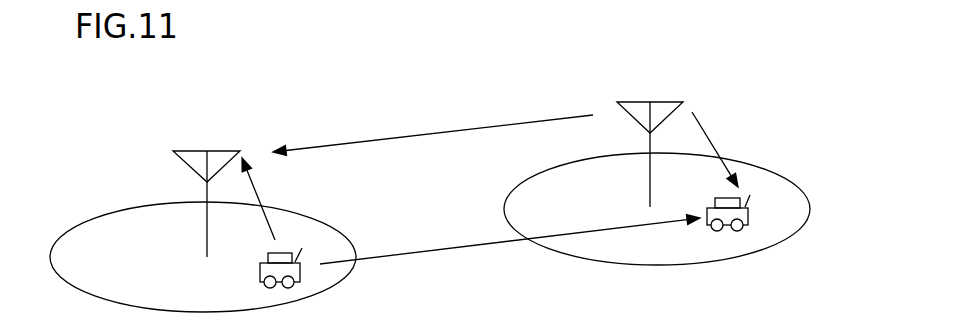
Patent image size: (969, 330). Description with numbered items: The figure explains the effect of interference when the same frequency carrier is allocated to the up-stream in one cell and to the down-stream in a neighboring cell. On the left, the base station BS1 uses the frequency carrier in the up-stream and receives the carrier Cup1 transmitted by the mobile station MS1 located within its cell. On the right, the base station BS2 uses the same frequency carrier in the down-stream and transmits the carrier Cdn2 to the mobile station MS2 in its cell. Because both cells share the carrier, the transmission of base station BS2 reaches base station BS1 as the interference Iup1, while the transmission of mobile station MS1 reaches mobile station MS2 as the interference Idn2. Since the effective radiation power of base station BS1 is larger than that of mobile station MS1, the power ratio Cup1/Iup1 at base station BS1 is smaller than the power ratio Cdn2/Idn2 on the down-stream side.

The base station BS1 is at (203, 231).
The mobile station MS1 is at (261, 277).
The base station BS2 is at (657, 183).
The mobile station MS2 is at (716, 224).
The interference from the base station BS2 Iup1 is at (433, 134).
The carrier from the mobile station MS1 Cup1 is at (282, 199).
The carrier from the base station BS2 Cdn2 is at (733, 149).
The interference from the mobile station MS1 Idn2 is at (510, 239).